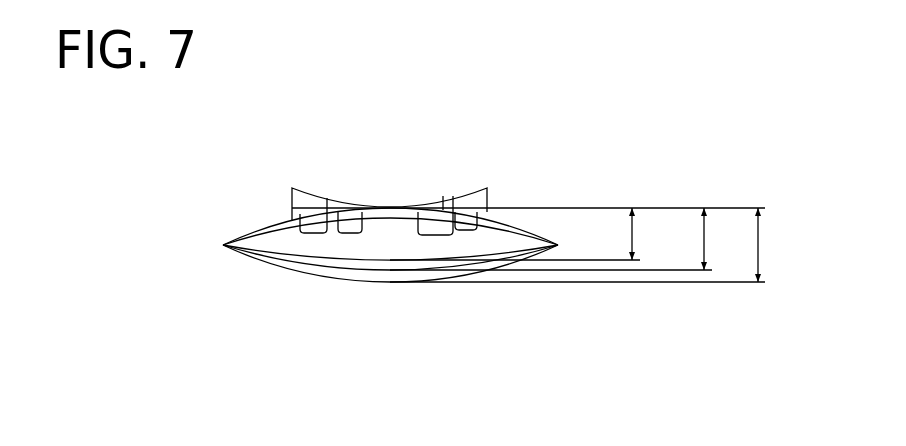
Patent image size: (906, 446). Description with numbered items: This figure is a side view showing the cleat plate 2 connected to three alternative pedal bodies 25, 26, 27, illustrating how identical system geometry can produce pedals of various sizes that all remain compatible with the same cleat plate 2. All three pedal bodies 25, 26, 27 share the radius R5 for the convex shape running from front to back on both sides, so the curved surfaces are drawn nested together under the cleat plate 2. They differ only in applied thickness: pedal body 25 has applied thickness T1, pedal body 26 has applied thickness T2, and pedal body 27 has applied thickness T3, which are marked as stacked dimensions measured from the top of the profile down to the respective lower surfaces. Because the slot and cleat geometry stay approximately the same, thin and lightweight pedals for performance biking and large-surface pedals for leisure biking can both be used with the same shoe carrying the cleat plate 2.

The cleat plate 2 is at (484, 201).
The pedal body 25 is at (265, 262).
The pedal body 26 is at (327, 266).
The pedal body 27 is at (403, 241).
The radius R5 is at (271, 229).
The applied thickness T1 is at (744, 245).
The applied thickness T2 is at (690, 239).
The applied thickness T3 is at (618, 234).